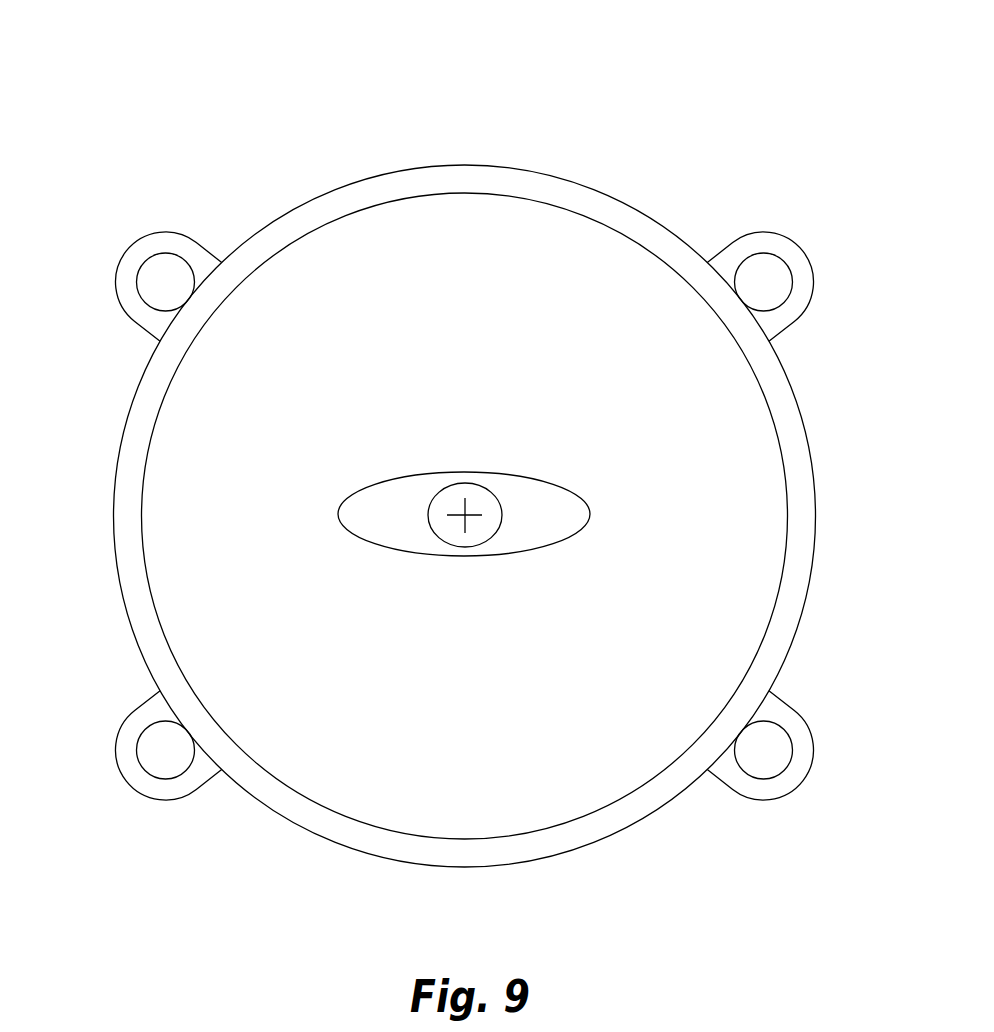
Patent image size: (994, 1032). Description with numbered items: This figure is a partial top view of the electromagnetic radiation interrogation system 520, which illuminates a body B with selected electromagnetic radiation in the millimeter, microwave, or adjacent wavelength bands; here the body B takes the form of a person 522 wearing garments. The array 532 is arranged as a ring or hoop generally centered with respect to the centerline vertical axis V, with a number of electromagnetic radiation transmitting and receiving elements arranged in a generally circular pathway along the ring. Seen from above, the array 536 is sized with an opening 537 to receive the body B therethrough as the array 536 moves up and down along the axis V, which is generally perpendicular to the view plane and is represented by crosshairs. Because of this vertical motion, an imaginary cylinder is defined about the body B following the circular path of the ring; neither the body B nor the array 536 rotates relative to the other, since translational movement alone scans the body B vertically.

The electromagnetic radiation interrogation system 520 is at (472, 447).
The person 522 is at (538, 479).
The array 532 is at (136, 268).
The array 536 is at (815, 522).
The opening 537 is at (343, 813).
The body B is at (510, 557).
The centerline vertical axis V is at (464, 517).